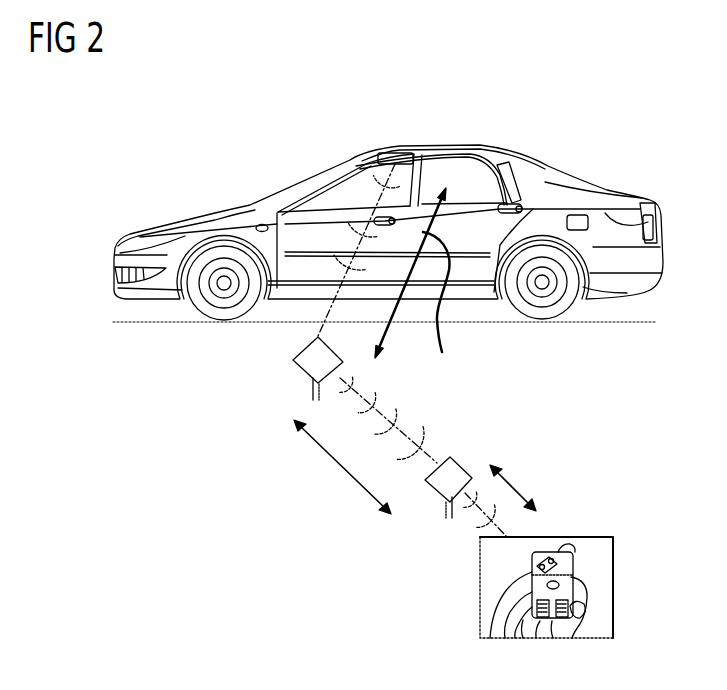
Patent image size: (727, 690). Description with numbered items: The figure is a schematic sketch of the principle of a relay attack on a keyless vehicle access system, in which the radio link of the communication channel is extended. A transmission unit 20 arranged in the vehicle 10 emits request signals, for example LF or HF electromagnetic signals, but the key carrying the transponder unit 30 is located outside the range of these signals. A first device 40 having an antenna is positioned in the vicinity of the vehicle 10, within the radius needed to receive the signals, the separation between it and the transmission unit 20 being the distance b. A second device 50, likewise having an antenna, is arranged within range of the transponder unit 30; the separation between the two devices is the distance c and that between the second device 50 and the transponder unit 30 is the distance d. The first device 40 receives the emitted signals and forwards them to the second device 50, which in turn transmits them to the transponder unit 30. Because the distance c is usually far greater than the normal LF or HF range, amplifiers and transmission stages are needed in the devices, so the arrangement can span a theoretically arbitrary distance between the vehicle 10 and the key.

The vehicle 10 is at (560, 173).
The transmission unit 20 is at (402, 153).
The transponder unit 30 is at (532, 556).
The first device 40 is at (300, 374).
The second device 50 is at (464, 470).
The distance between first device and transmission unit b is at (416, 285).
The distance between second device and first device c is at (342, 470).
The distance between second device and transponder unit d is at (513, 488).